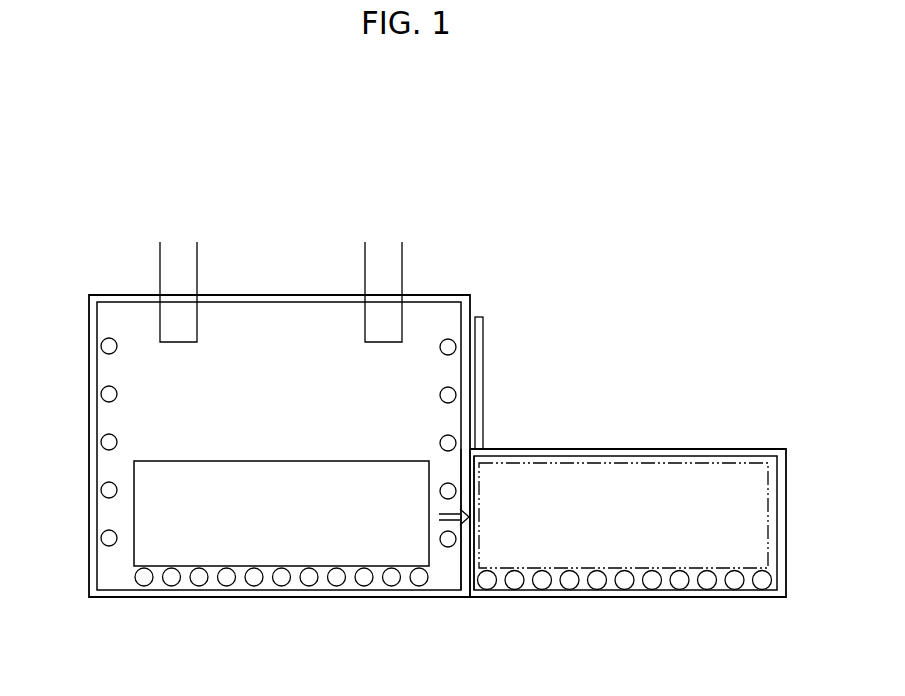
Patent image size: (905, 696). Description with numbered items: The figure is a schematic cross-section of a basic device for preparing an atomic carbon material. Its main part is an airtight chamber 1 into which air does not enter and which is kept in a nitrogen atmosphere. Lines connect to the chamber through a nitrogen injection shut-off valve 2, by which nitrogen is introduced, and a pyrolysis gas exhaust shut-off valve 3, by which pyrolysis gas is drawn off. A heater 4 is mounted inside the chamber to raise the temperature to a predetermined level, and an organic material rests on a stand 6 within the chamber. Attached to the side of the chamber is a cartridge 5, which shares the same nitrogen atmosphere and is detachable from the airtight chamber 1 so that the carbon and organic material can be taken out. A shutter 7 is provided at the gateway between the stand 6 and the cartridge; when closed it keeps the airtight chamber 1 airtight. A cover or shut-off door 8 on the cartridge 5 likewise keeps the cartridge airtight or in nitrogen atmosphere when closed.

The airtight chamber 1 is at (470, 306).
The nitrogen injection shut-off valve 2 is at (379, 233).
The pyrolysis gas exhaust shut-off valve 3 is at (174, 203).
The heater 4 is at (101, 345).
The cartridge 5 is at (645, 449).
The stand 6 is at (281, 513).
The shutter 7 is at (466, 562).
The cover or shut-off door 8 is at (483, 386).